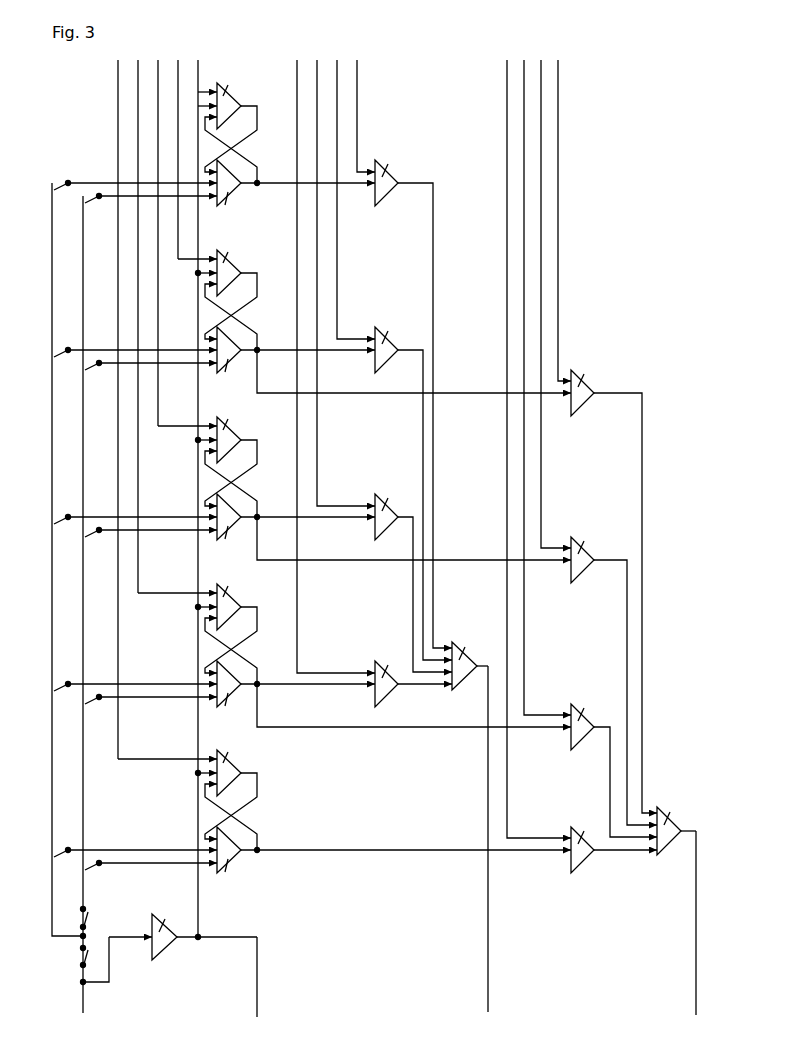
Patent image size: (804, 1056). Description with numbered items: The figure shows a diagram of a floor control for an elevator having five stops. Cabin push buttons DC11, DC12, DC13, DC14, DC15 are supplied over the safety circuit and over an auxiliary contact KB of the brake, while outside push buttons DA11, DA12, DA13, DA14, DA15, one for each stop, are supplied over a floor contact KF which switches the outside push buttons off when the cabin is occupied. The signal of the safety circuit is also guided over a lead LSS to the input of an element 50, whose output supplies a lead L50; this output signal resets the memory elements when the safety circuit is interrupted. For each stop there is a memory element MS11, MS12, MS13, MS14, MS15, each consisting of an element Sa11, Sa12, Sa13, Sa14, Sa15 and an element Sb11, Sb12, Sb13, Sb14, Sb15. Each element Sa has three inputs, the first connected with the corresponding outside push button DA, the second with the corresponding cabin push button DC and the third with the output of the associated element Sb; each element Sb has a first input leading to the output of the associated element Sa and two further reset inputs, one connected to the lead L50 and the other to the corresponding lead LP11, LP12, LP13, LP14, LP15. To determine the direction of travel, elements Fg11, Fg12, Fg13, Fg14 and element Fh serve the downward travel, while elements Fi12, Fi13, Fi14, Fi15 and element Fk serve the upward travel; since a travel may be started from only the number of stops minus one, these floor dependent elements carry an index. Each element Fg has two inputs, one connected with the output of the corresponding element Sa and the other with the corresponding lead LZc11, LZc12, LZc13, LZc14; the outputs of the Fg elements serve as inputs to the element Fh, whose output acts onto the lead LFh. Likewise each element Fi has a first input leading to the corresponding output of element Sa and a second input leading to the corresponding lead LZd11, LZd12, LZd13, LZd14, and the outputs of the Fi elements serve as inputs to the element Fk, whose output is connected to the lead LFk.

The lead LP LP11 is at (190, 498).
The lead LP LP12 is at (170, 159).
The lead LP LP13 is at (150, 243).
The lead LP LP14 is at (130, 326).
The lead LP LP15 is at (110, 409).
The element Sb Sb11 is at (222, 97).
The element Sb Sb12 is at (212, 264).
The element Sb Sb13 is at (202, 431).
The element Sb Sb14 is at (192, 598).
The element Sb Sb15 is at (182, 764).
The element Sa Sa11 is at (290, 195).
The element Sa Sa12 is at (388, 362).
The element Sa Sa13 is at (388, 529).
The element Sa Sa14 is at (388, 696).
The element Sa Sa15 is at (388, 862).
The memory element MS MS11 is at (246, 146).
The memory element MS MS12 is at (246, 313).
The memory element MS MS13 is at (246, 480).
The memory element MS MS14 is at (246, 647).
The memory element MS MS15 is at (246, 813).
The cabin push button DC DC11 is at (125, 193).
The cabin push button DC DC12 is at (125, 360).
The cabin push button DC DC13 is at (125, 527).
The cabin push button DC DC14 is at (125, 694).
The cabin push button DC DC15 is at (125, 860).
The outside push button DA DA11 is at (141, 210).
The outside push button DA DA12 is at (141, 377).
The outside push button DA DA13 is at (141, 544).
The outside push button DA DA14 is at (141, 711).
The outside push button DA DA15 is at (141, 877).
The element Fg Fg11 is at (411, 395).
The element Fg Fg12 is at (411, 484).
The element Fg Fg13 is at (411, 574).
The element Fg Fg14 is at (411, 675).
The lead LZc LZc11 is at (357, 116).
The lead LZc LZc12 is at (347, 199).
The lead LZc LZc13 is at (337, 283).
The lead LZc LZc14 is at (327, 366).
The element Fh is at (466, 656).
The lead LFh is at (479, 844).
The element Fi Fi12 is at (610, 581).
The element Fi Fi13 is at (610, 671).
The element Fi Fi14 is at (610, 760).
The element Fi Fi15 is at (610, 840).
The lead LZd LZd11 is at (556, 220).
The lead LZd LZd12 is at (547, 304).
The lead LZd LZd13 is at (539, 387).
The lead LZd LZd14 is at (530, 449).
The element Fk is at (671, 821).
The lead LFk is at (687, 928).
The element 50 is at (183, 928).
The lead L50 is at (246, 979).
The floor contact KF is at (74, 920).
The auxiliary contact of the brake KB is at (74, 957).
The lead LSS is at (85, 979).